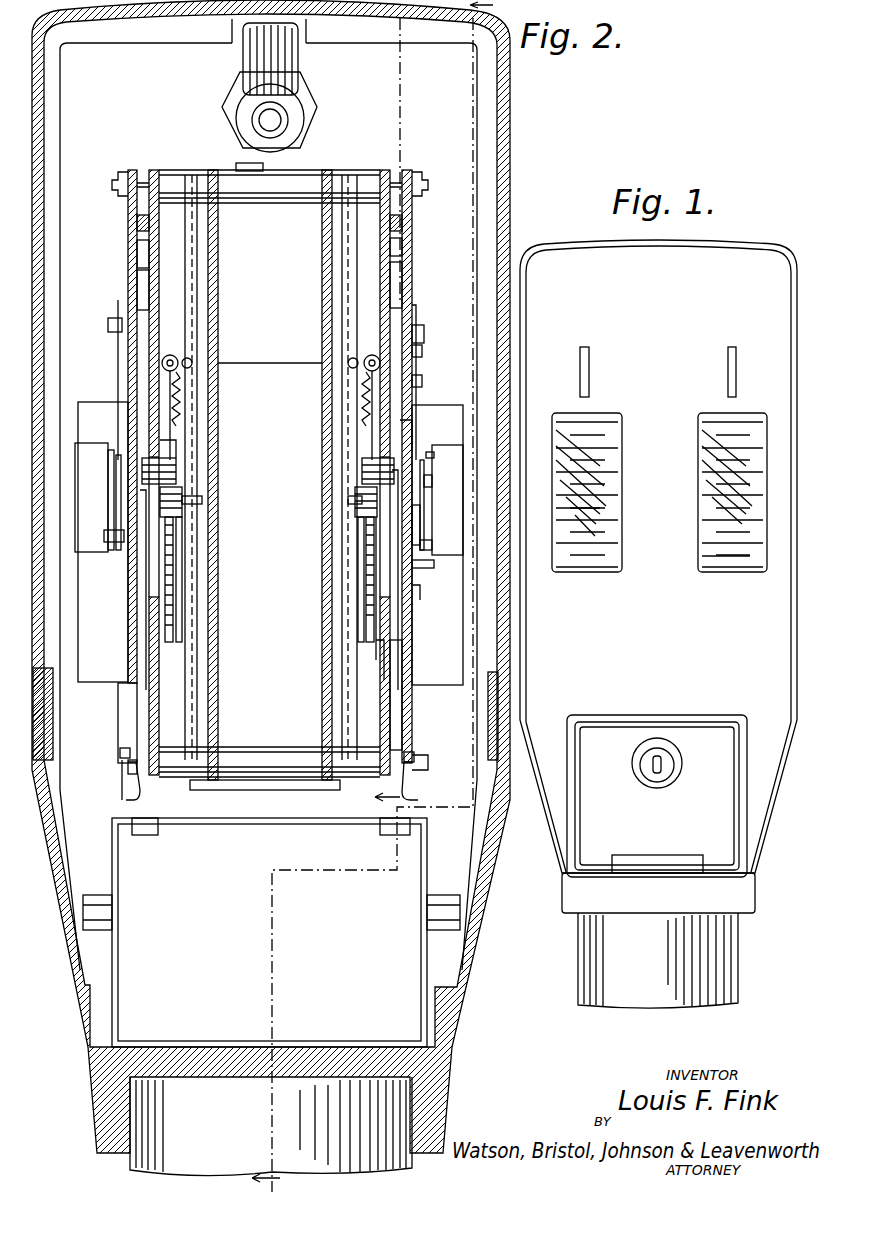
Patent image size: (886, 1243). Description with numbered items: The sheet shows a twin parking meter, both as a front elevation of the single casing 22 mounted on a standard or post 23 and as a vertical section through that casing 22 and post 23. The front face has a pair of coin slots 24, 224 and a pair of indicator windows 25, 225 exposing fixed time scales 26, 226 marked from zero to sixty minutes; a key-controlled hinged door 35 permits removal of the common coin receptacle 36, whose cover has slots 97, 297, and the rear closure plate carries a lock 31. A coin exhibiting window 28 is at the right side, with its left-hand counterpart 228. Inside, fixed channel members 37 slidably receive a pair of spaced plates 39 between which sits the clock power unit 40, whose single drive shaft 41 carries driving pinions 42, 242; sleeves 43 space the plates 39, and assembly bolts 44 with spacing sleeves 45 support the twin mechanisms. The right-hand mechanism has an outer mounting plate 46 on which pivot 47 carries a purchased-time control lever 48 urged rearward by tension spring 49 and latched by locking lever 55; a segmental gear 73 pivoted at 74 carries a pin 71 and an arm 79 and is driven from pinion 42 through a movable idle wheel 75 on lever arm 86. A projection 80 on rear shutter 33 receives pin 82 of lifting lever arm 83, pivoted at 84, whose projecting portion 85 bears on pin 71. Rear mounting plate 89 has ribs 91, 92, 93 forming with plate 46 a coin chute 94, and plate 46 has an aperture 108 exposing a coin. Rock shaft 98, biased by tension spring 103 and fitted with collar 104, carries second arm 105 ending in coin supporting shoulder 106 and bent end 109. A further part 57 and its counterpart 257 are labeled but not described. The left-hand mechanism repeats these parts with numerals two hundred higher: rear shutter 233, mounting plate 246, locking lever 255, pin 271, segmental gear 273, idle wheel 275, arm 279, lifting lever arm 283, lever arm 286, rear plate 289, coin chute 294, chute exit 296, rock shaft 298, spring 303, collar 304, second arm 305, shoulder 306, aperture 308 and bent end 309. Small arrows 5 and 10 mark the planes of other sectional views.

In FIG. 2, the section line 5 is at (379, 595).
In FIG. 2, the direction arrow 10 is at (390, 804).
In FIG. 2, the parking meter casing 22 is at (511, 133).
In FIG. 1, the parking meter casing 22 is at (730, 262).
In FIG. 2, the standard or post 23 is at (271, 1126).
In FIG. 1, the standard or post 23 is at (600, 960).
In FIG. 1, the coin slot 24 is at (732, 347).
In FIG. 1, the indicator window 25 is at (770, 420).
In FIG. 1, the fixed time scale 26 is at (708, 560).
In FIG. 2, the coin exhibiting window 28 is at (488, 724).
In FIG. 2, the latch or lock 31 is at (300, 100).
In FIG. 2, the auxiliary time interval scale or shutter 33 is at (420, 520).
In FIG. 1, the key controlled hinged door 35 is at (596, 836).
In FIG. 2, the common receptacle 36 is at (421, 948).
In FIG. 2, the fixed channel members 37 is at (198, 223).
In FIG. 2, the spaced apart plates 39 is at (213, 170).
In FIG. 2, the power unit 40 is at (234, 362).
In FIG. 2, the drive shaft 41 is at (204, 498).
In FIG. 2, the driving pinion 42 is at (364, 530).
In FIG. 2, the sleeves 43 is at (300, 170).
In FIG. 2, the assembly bolts 44 is at (120, 172).
In FIG. 2, the spacing sleeves 45 is at (182, 168).
In FIG. 2, the outer mounting plate 46 is at (133, 170).
In FIG. 2, the pivot 47 is at (426, 340).
In FIG. 2, the purchased-time control lever 48 is at (424, 356).
In FIG. 2, the tension spring 49 is at (424, 380).
In FIG. 2, the locking lever 55 is at (420, 458).
In FIG. 2, the rod 57 is at (424, 322).
In FIG. 2, the pin 71 is at (434, 564).
In FIG. 2, the segmental gear 73 is at (396, 580).
In FIG. 2, the pivot 74 is at (374, 562).
In FIG. 2, the movable idle wheel 75 is at (364, 464).
In FIG. 2, the arm 79 is at (356, 550).
In FIG. 2, the projection 80 is at (434, 458).
In FIG. 2, the pin 82 is at (432, 483).
In FIG. 2, the lifting lever arm 83 is at (424, 500).
In FIG. 2, the pivot 84 is at (432, 542).
In FIG. 2, the projecting portion 85 is at (420, 590).
In FIG. 2, the lever arm 86 is at (404, 428).
In FIG. 2, the rear mounting plate 89 is at (156, 170).
In FIG. 2, the rib 91 is at (412, 224).
In FIG. 2, the rib 92 is at (392, 298).
In FIG. 2, the rib 93 is at (412, 642).
In FIG. 2, the coin chute 94 is at (412, 246).
In FIG. 2, the slot 97 is at (380, 830).
In FIG. 2, the rock shaft 98 is at (372, 355).
In FIG. 2, the tension spring 103 is at (360, 414).
In FIG. 2, the collar 104 is at (352, 362).
In FIG. 2, the second arm 105 is at (376, 664).
In FIG. 2, the coin supporting shoulder 106 is at (412, 754).
In FIG. 2, the aperture 108 is at (402, 706).
In FIG. 2, the end of arm 109 is at (418, 792).
In FIG. 1, the coin slot 224 is at (596, 334).
In FIG. 1, the indicator window 225 is at (644, 418).
In FIG. 1, the fixed time scale 226 is at (612, 512).
In FIG. 2, the coin exhibiting window 228 is at (53, 727).
In FIG. 2, the auxiliary time interval scale or shutter 233 is at (114, 497).
In FIG. 2, the driving pinion 242 is at (184, 484).
In FIG. 2, the outer mounting plate 246 is at (128, 223).
In FIG. 2, the locking lever 255 is at (118, 455).
In FIG. 2, the stop 257 is at (122, 320).
In FIG. 2, the pin 271 is at (108, 576).
In FIG. 2, the segmental gear 273 is at (183, 552).
In FIG. 2, the movable idle wheel 275 is at (176, 462).
In FIG. 2, the arm 279 is at (175, 527).
In FIG. 2, the lifting lever arm 283 is at (104, 530).
In FIG. 2, the lever arm 286 is at (162, 440).
In FIG. 2, the rear mounting plate 289 is at (150, 285).
In FIG. 2, the coin chute 294 is at (137, 252).
In FIG. 2, the exit 296 is at (128, 792).
In FIG. 2, the slot 297 is at (146, 836).
In FIG. 2, the rock shaft 298 is at (168, 355).
In FIG. 2, the tension spring 303 is at (182, 400).
In FIG. 2, the collar 304 is at (178, 358).
In FIG. 2, the second arm 305 is at (148, 616).
In FIG. 2, the coin supporting shoulder 306 is at (120, 752).
In FIG. 2, the aperture 308 is at (128, 702).
In FIG. 2, the end of arm 309 is at (126, 786).